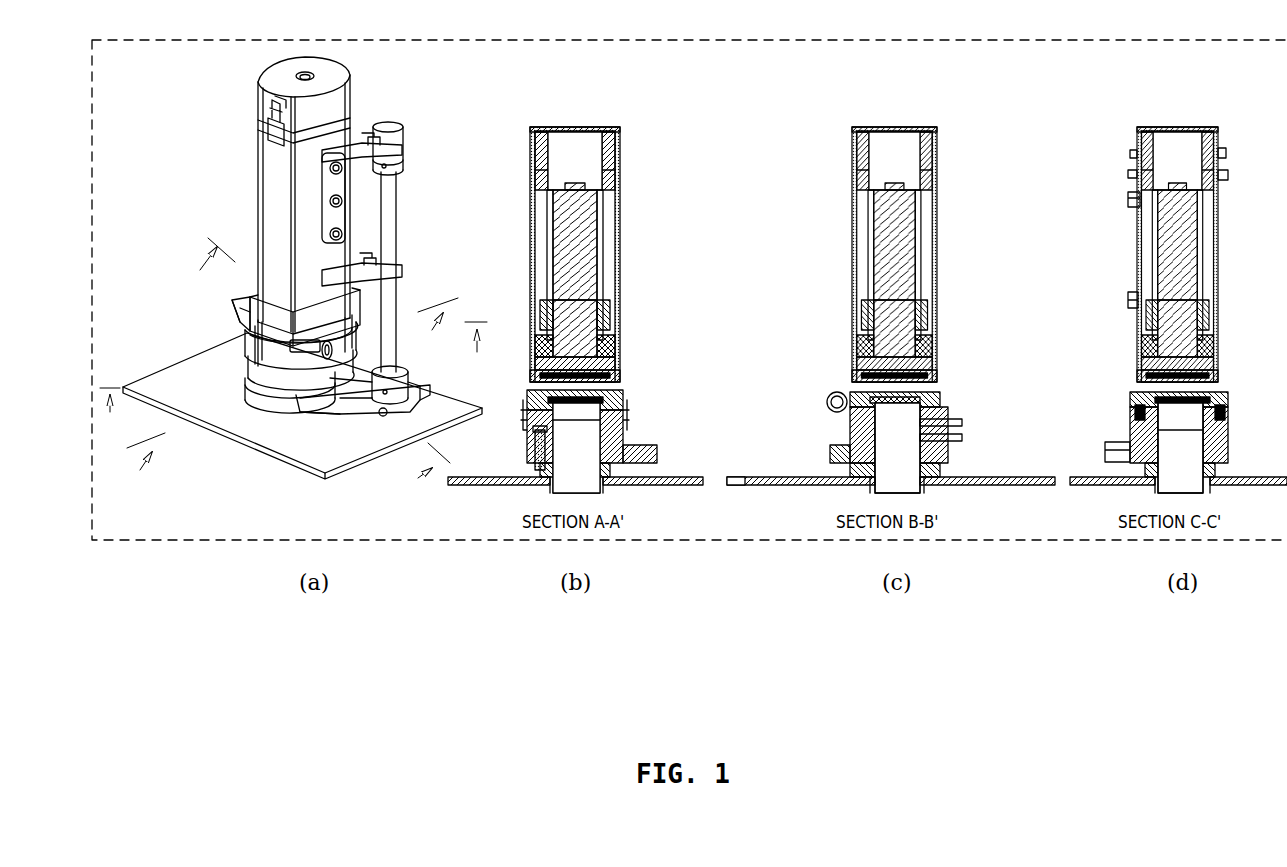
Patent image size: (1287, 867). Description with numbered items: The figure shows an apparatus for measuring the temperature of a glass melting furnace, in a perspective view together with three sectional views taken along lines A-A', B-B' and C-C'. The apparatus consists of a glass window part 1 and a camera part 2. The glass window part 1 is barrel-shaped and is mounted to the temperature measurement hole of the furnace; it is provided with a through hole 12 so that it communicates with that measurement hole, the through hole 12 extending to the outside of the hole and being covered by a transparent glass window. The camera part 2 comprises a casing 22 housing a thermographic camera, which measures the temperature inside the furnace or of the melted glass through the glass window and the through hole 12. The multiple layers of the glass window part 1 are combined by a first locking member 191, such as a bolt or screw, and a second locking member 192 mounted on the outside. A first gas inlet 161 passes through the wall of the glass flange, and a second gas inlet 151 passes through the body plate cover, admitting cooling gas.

The glass window part 1 is at (218, 322).
The camera part 2 is at (242, 124).
The through hole 12 is at (572, 447).
The casing 22 is at (625, 195).
The first locking member 191 is at (537, 452).
The second locking member 192 is at (522, 415).
The first gas inlet 161 is at (960, 419).
The second gas inlet 151 is at (960, 437).